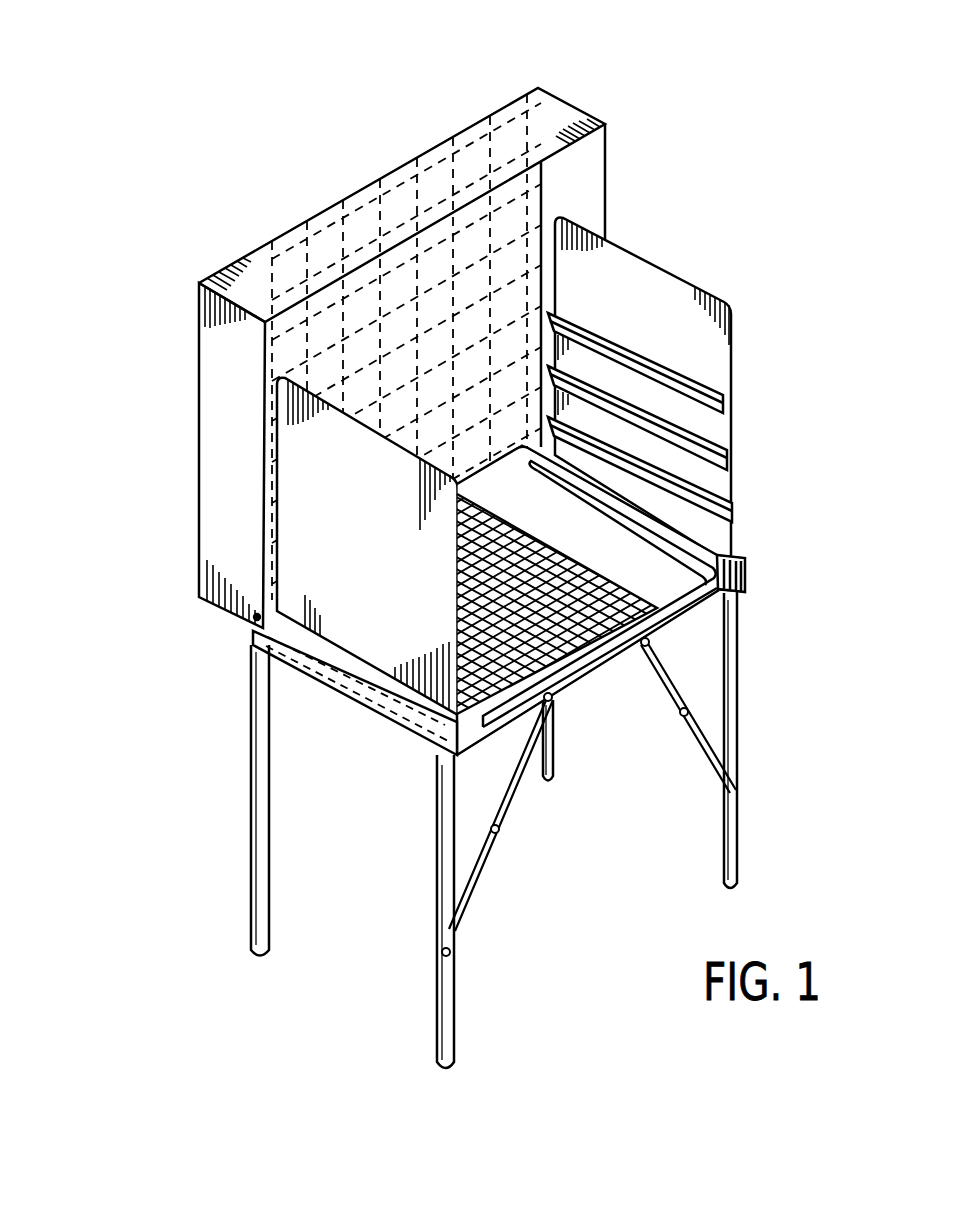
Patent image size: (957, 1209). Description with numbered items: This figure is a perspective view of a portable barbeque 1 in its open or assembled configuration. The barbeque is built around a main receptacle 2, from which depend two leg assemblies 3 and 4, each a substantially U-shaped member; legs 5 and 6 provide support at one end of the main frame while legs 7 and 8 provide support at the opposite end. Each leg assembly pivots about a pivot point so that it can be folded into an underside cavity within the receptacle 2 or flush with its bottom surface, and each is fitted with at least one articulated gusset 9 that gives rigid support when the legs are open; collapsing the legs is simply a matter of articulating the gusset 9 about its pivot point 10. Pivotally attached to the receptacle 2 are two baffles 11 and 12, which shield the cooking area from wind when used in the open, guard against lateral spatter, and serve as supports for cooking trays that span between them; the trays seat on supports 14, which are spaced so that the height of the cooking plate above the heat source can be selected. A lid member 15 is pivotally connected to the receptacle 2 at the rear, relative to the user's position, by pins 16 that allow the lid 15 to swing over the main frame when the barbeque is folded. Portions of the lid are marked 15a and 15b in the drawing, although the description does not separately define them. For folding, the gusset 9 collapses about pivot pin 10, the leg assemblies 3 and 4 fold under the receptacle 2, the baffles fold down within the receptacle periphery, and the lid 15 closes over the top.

The portable barbeque 1 is at (467, 536).
The main receptacle 2 is at (748, 574).
The leg assembly 3 is at (251, 838).
The leg assembly 4 is at (738, 700).
The leg 5 is at (251, 754).
The leg 6 is at (452, 1028).
The leg 7 is at (553, 728).
The leg 8 is at (738, 836).
The articulated gusset 9 is at (520, 797).
The pivot point 10 is at (683, 714).
The baffle 11 is at (652, 278).
The baffle 12 is at (372, 568).
The supports 14 is at (733, 405).
The lid member 15 is at (344, 378).
The back panel side wall 15a is at (200, 435).
The back panel grid 15b is at (292, 262).
The pins 16 is at (257, 620).